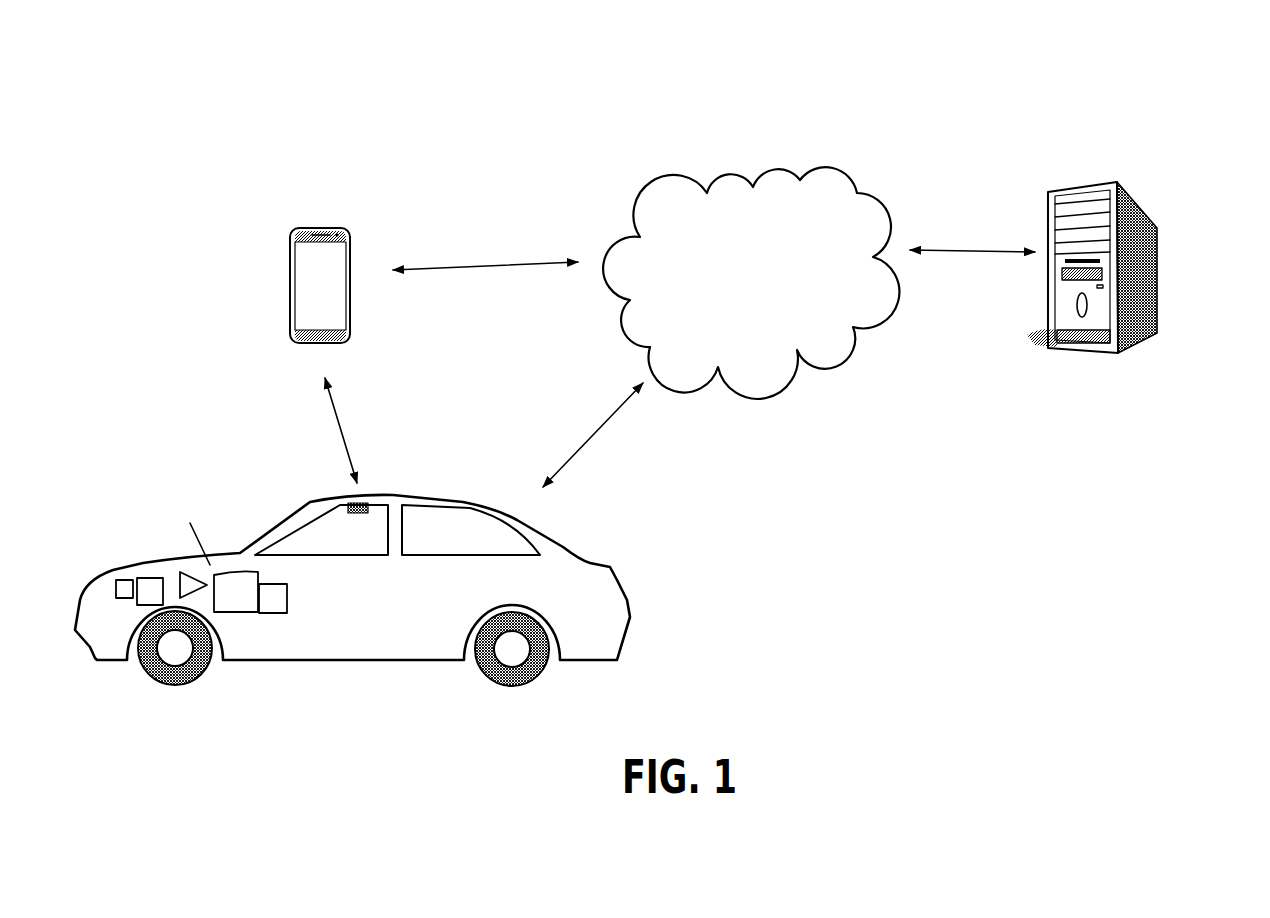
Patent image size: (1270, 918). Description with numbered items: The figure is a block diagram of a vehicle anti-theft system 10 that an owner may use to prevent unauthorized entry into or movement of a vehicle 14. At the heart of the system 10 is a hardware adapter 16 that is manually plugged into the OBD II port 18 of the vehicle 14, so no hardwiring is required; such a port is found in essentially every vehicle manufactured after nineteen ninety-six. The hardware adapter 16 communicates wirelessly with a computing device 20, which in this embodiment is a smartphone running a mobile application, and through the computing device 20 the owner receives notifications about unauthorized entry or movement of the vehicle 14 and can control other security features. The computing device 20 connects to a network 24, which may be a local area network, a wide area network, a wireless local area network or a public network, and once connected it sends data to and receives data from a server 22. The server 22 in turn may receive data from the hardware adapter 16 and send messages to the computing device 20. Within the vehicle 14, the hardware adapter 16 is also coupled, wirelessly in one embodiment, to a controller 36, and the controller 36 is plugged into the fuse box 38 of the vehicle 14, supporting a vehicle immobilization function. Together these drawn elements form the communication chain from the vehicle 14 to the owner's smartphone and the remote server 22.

The vehicle anti-theft system 10 is at (468, 147).
The vehicle 14 is at (445, 520).
The hardware adapter 16 is at (290, 587).
The OBD II port 18 is at (242, 567).
The computing device 20 is at (293, 270).
The server 22 is at (1142, 293).
The network 24 is at (827, 360).
The controller 36 is at (130, 587).
The fuse box 38 is at (155, 577).